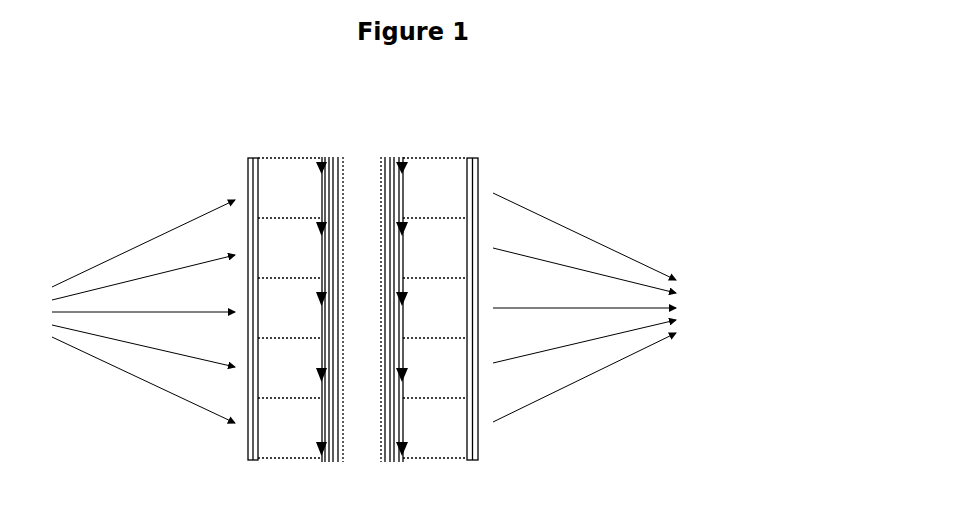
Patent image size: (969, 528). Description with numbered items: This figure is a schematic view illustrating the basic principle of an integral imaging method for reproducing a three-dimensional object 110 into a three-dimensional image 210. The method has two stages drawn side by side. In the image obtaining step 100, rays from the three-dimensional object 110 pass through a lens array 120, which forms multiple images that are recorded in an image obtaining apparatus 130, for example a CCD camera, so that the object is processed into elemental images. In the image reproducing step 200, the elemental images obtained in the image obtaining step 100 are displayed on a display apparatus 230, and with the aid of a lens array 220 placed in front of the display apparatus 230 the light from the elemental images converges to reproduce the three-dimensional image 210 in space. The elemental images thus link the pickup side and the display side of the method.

The image obtaining step 100 is at (115, 215).
The 3D object 110 is at (15, 345).
The lens array 120 is at (248, 180).
The image obtaining apparatus 130 is at (340, 462).
The image reproducing step 200 is at (613, 210).
The 3D image 210 is at (700, 345).
The lens array 220 is at (478, 163).
The display apparatus 230 is at (403, 433).